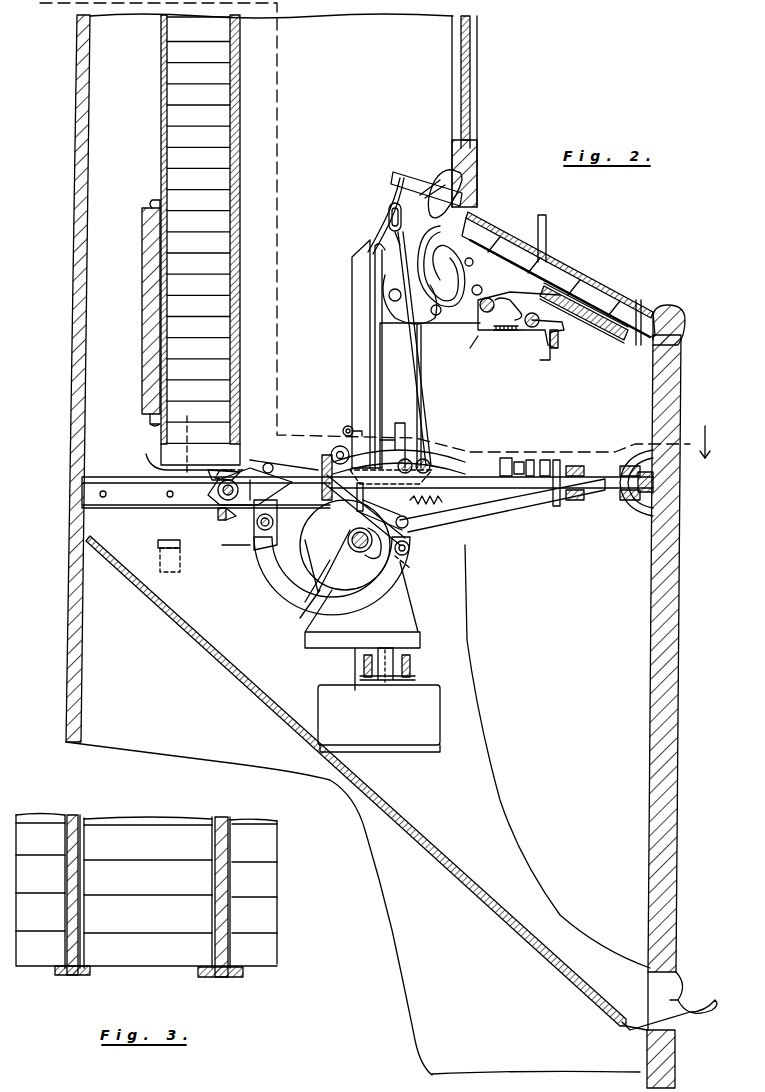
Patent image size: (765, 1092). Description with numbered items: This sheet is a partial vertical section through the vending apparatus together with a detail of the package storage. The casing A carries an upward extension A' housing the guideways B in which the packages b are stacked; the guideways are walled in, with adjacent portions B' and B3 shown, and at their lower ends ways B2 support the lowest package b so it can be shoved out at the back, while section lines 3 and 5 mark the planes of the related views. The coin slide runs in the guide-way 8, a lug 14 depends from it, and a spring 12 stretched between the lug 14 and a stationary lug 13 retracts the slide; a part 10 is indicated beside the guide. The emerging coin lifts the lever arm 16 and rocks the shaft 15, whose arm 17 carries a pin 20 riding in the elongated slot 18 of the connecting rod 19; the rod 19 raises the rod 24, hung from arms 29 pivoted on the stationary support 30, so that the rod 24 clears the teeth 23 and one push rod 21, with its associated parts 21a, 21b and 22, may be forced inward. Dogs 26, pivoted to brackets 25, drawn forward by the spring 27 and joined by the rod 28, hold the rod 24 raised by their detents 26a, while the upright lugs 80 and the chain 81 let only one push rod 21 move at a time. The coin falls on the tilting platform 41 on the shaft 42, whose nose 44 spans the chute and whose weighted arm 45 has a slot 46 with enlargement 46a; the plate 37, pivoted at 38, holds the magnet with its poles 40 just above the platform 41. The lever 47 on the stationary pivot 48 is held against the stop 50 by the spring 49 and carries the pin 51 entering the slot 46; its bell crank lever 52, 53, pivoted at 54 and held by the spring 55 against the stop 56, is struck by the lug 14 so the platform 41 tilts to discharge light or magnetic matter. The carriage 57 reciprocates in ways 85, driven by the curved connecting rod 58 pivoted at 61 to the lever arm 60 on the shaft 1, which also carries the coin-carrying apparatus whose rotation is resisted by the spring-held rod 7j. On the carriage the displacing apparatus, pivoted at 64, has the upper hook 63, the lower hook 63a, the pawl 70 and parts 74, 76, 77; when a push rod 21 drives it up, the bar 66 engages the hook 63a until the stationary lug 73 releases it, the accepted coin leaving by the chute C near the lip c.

In FIG. 2, the shaft 1 is at (350, 542).
In FIG. 2, the section line 3 is at (48, 28).
In FIG. 2, the section line 5 is at (708, 446).
In FIG. 2, the guide-way 8 is at (665, 313).
In FIG. 2, the pin 10 is at (546, 226).
In FIG. 2, the spring 12 is at (616, 322).
In FIG. 2, the stationary lug 13 is at (639, 345).
In FIG. 2, the lug 14 is at (560, 282).
In FIG. 2, the rock shaft 15 is at (438, 172).
In FIG. 2, the lever arm 16 is at (425, 185).
In FIG. 2, the arm 17 is at (395, 202).
In FIG. 2, the elongated slot 18 is at (392, 227).
In FIG. 2, the connecting rod 19 is at (418, 375).
In FIG. 2, the pin 20 is at (392, 213).
In FIG. 2, the push rods 21 is at (521, 483).
In FIG. 2, the collar 21a is at (570, 507).
In FIG. 2, the bracket plate 21b is at (558, 504).
In FIG. 2, the ring bearing 22 is at (660, 508).
In FIG. 2, the tooth 23 is at (440, 458).
In FIG. 2, the rod 24 is at (412, 462).
In FIG. 2, the brackets 25 is at (502, 505).
In FIG. 2, the dogs 26 is at (398, 500).
In FIG. 2, the slots or detents 26a is at (400, 425).
In FIG. 2, the spring 27 is at (425, 508).
In FIG. 2, the rod 28 is at (425, 458).
In FIG. 2, the arms 29 is at (338, 448).
In FIG. 2, the stationary support 30 is at (330, 460).
In FIG. 2, the plate 37 is at (354, 407).
In FIG. 2, the pivot 38 is at (346, 424).
In FIG. 2, the magnet poles 40 is at (353, 269).
In FIG. 2, the tilting platform 41 is at (384, 272).
In FIG. 2, the shaft 42 is at (388, 294).
In FIG. 2, the nose 44 is at (372, 304).
In FIG. 2, the arm 45 is at (441, 266).
In FIG. 2, the slot 46 is at (445, 272).
In FIG. 2, the slot enlargement 46a is at (440, 322).
In FIG. 2, the lever 47 is at (509, 311).
In FIG. 2, the stationary pivot 48 is at (546, 347).
In FIG. 2, the spring 49 is at (560, 345).
In FIG. 2, the stop 50 is at (479, 288).
In FIG. 2, the pin 51 is at (412, 326).
In FIG. 2, the bell crank arm 52 is at (512, 305).
In FIG. 2, the bell crank arm 53 is at (492, 332).
In FIG. 2, the pivot 54 is at (480, 336).
In FIG. 2, the spring 55 is at (512, 336).
In FIG. 2, the stop 56 is at (506, 318).
In FIG. 2, the carriage 57 is at (250, 480).
In FIG. 2, the curved connecting rod 58 is at (268, 568).
In FIG. 2, the lever arm 60 is at (410, 546).
In FIG. 2, the pivot 61 is at (408, 556).
In FIG. 2, the hook 63 is at (232, 461).
In FIG. 2, the hook 63a is at (218, 508).
In FIG. 2, the pivot 64 is at (222, 494).
In FIG. 2, the rod 66 is at (262, 545).
In FIG. 2, the click or pawl 70 is at (228, 545).
In FIG. 2, the stationary lug 73 is at (160, 545).
In FIG. 2, the lever 74 is at (280, 462).
In FIG. 2, the wedge 76 is at (212, 468).
In FIG. 2, the bar 77 is at (340, 515).
In FIG. 2, the rods or lugs 80 is at (560, 462).
In FIG. 2, the chain 81 is at (544, 460).
In FIG. 2, the ways 85 is at (152, 500).
In FIG. 2, the rod 7j is at (360, 657).
In FIG. 2, the casing A is at (371, 544).
In FIG. 2, the upward extension A' is at (513, 552).
In FIG. 2, the guideways B is at (197, 240).
In FIG. 3, the column strip B' is at (147, 879).
In FIG. 2, the ways B2 is at (177, 460).
In FIG. 3, the ways B2 is at (60, 974).
In FIG. 2, the block B3 is at (134, 313).
In FIG. 2, the package b is at (232, 180).
In FIG. 3, the package b is at (146, 890).
In FIG. 2, the chute C is at (172, 606).
In FIG. 2, the lip c is at (669, 1001).